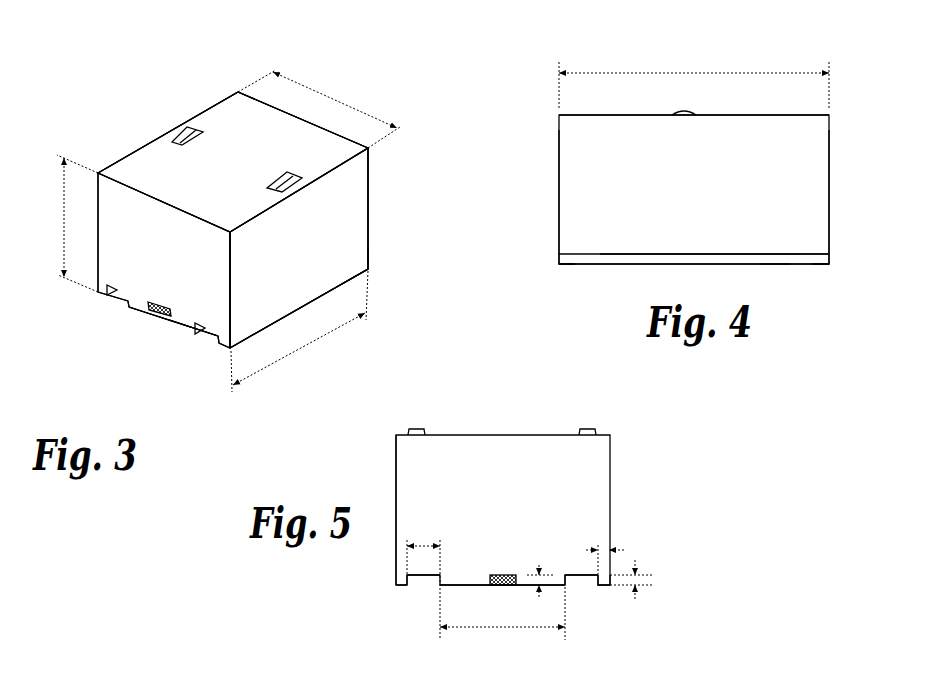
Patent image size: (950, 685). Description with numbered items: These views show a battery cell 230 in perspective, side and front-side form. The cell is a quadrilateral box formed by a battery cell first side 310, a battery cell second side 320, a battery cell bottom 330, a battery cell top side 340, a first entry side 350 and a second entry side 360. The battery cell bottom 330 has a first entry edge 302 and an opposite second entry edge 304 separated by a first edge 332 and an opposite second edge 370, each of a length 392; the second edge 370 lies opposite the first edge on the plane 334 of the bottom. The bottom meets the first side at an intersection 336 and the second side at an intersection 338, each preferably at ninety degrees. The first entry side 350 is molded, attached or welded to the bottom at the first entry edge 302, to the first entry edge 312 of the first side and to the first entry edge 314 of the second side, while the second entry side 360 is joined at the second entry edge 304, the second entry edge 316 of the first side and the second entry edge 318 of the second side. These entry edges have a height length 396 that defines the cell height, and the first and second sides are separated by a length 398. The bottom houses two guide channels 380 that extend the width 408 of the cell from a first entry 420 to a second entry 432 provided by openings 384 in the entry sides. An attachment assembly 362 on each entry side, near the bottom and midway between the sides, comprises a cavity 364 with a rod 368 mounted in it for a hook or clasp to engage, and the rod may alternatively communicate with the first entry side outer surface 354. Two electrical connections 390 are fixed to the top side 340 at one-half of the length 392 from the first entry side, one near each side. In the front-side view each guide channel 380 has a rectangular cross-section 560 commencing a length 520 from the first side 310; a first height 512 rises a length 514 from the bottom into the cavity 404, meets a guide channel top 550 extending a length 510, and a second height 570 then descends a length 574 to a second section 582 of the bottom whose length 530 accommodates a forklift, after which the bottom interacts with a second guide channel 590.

In FIG. 3, the battery cell 230 is at (115, 118).
In FIG. 4, the battery cell 230 is at (641, 60).
In FIG. 3, the first entry edge 302 is at (160, 320).
In FIG. 4, the first entry edge 302 is at (555, 264).
In FIG. 4, the second entry edge 304 is at (691, 306).
In FIG. 3, the battery cell first side 310 is at (299, 248).
In FIG. 4, the battery cell first side 310 is at (640, 190).
In FIG. 5, the battery cell first side 310 is at (612, 470).
In FIG. 3, the first entry edge of the battery cell first side 312 is at (240, 240).
In FIG. 3, the first entry edge of the second side 314 is at (96, 180).
In FIG. 3, the second entry edge of the battery cell first side 316 is at (372, 215).
In FIG. 3, the second entry edge of the battery cell second side 318 is at (235, 92).
In FIG. 3, the battery cell second side 320 is at (120, 155).
In FIG. 5, the battery cell second side 320 is at (395, 480).
In FIG. 3, the battery cell bottom 330 is at (190, 333).
In FIG. 4, the battery cell bottom 330 is at (766, 268).
In FIG. 3, the first edge 332 is at (263, 333).
In FIG. 4, the first edge 332 is at (616, 265).
In FIG. 3, the plane of the battery cell bottom 334 is at (140, 313).
In FIG. 3, the intersection of the battery cell bottom and first side 336 is at (366, 268).
In FIG. 4, the intersection of the battery cell bottom and first side 336 is at (779, 267).
In FIG. 3, the intersection of the battery cell bottom and second side 338 is at (64, 314).
In FIG. 4, the intersection of the battery cell bottom and second side 338 is at (795, 305).
In FIG. 3, the battery cell top side 340 is at (233, 162).
In FIG. 4, the battery cell top side 340 is at (745, 113).
In FIG. 3, the first entry side 350 is at (164, 260).
In FIG. 3, the first entry side outer surface 354 is at (97, 206).
In FIG. 3, the second entry side 360 is at (371, 178).
In FIG. 3, the attachment assembly 362 is at (170, 314).
In FIG. 5, the attachment assembly 362 is at (514, 590).
In FIG. 3, the cavity 364 is at (175, 313).
In FIG. 5, the cavity 364 is at (489, 577).
In FIG. 3, the rod 368 is at (175, 322).
In FIG. 5, the rod 368 is at (504, 573).
In FIG. 3, the second edge 370 is at (106, 292).
In FIG. 4, the second edge 370 is at (642, 301).
In FIG. 3, the guide channels 380 is at (124, 302).
In FIG. 4, the guide channels 380 is at (812, 252).
In FIG. 5, the guide channels 380 is at (582, 583).
In FIG. 3, the openings 384 is at (212, 338).
In FIG. 5, the openings 384 is at (420, 580).
In FIG. 3, the electrical connections 390 is at (178, 128).
In FIG. 4, the electrical connections 390 is at (680, 112).
In FIG. 5, the electrical connections 390 is at (418, 428).
In FIG. 3, the length L5 392 is at (320, 347).
In FIG. 3, the length L6 396 is at (65, 218).
In FIG. 3, the length L7 398 is at (332, 100).
In FIG. 4, the cavity of the battery cell 404 is at (758, 238).
In FIG. 4, the width of the battery cell 408 is at (680, 73).
In FIG. 4, the first entry 420 is at (558, 262).
In FIG. 4, the second entry 432 is at (697, 244).
In FIG. 5, the length L9 510 is at (424, 546).
In FIG. 5, the first height 512 is at (671, 558).
In FIG. 5, the length L8 514 is at (635, 581).
In FIG. 5, the length L10 520 is at (604, 550).
In FIG. 5, the length L11 530 is at (502, 624).
In FIG. 5, the guide channel top 550 is at (568, 574).
In FIG. 5, the rectangular cross-section 560 is at (408, 583).
In FIG. 5, the second height 570 is at (539, 514).
In FIG. 5, the length L12 574 is at (539, 580).
In FIG. 5, the second section of the battery cell bottom 582 is at (477, 587).
In FIG. 5, the second guide channel 590 is at (402, 583).